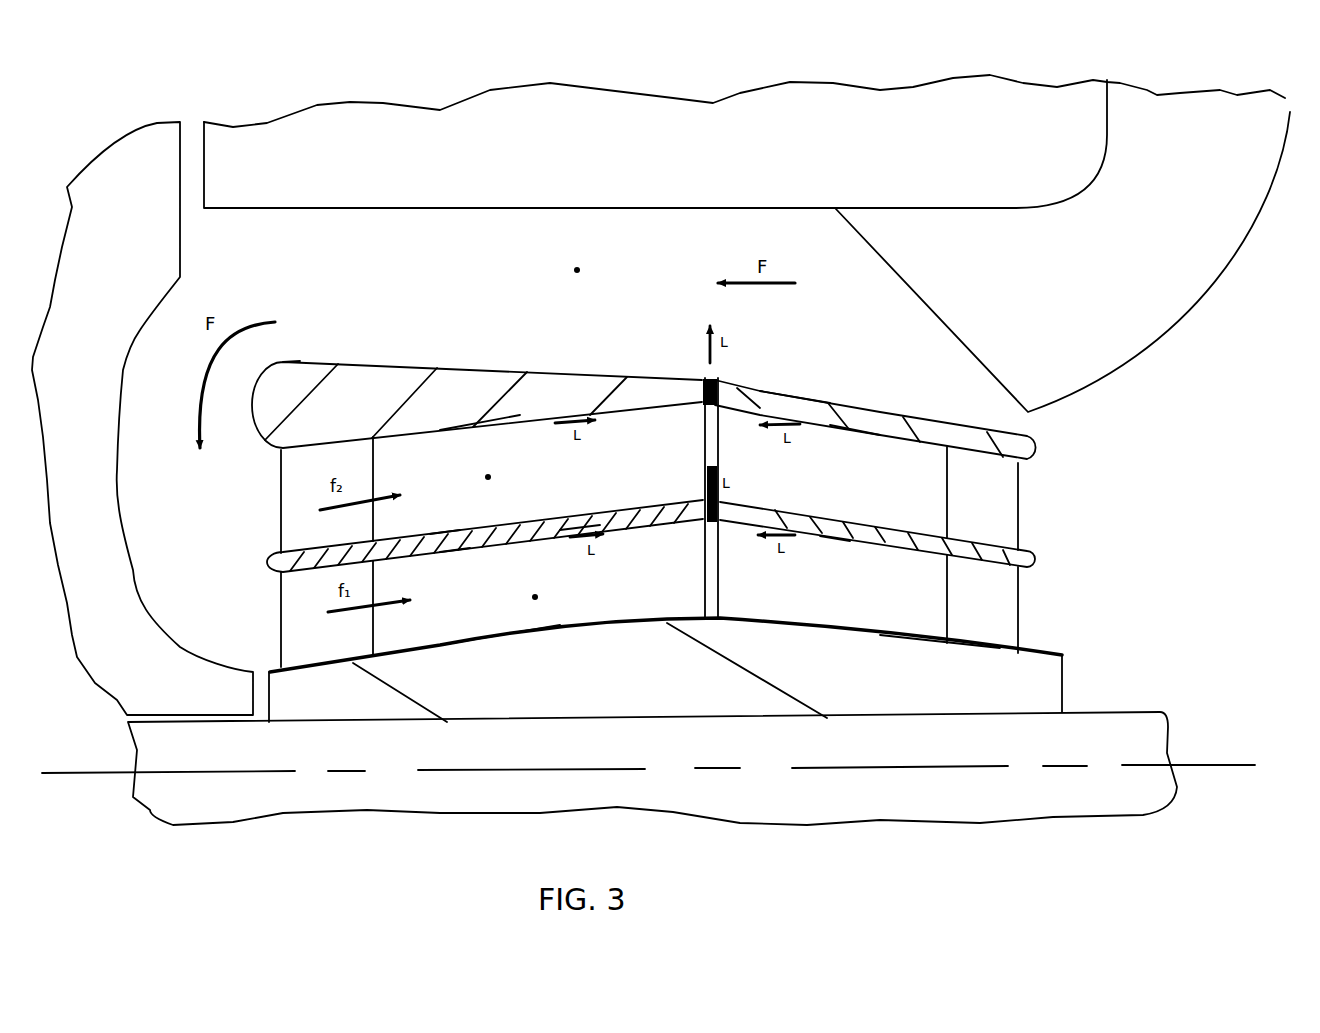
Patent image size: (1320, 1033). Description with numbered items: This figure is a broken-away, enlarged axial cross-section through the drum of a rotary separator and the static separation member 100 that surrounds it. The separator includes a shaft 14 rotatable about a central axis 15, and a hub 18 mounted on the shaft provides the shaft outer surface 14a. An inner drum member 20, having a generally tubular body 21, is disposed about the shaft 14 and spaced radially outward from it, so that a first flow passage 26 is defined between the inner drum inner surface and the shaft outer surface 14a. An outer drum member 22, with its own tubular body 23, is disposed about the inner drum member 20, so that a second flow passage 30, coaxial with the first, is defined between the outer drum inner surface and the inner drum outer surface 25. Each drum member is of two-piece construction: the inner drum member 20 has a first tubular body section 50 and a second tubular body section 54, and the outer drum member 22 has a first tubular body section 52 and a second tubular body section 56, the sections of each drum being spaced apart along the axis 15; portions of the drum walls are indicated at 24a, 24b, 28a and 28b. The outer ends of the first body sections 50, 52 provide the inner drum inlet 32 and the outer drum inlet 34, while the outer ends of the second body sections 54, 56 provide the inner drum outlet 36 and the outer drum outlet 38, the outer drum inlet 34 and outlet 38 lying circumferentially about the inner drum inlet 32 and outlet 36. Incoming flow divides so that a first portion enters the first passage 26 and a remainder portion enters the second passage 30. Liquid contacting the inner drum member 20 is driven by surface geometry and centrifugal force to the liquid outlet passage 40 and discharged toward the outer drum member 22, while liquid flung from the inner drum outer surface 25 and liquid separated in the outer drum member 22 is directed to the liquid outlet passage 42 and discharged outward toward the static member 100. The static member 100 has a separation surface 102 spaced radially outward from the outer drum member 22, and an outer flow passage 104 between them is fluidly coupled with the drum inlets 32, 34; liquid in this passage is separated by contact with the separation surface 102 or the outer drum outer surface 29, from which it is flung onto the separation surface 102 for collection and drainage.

The static separation member 100 is at (507, 117).
The separation surface 102 is at (473, 208).
The outer flow passage 104 is at (577, 270).
The shaft 14 is at (668, 736).
The outer surface of the shaft 14a is at (627, 617).
The central axis 15 is at (1235, 760).
The hub 18 is at (665, 659).
The inner drum member 20 is at (606, 532).
The tubular body 21 is at (444, 530).
The outer drum member 22 is at (644, 390).
The tubular body 23 is at (360, 362).
The lower plate first portion 24a is at (460, 553).
The lower plate second portion 24b is at (828, 540).
The outer circumferential surface of the inner drum 25 is at (582, 510).
The first flow passage 26 is at (535, 597).
The upper plate first portion 28a is at (519, 426).
The upper plate second portion 28b is at (868, 435).
The outer circumferential surface of the outer drum 29 is at (812, 400).
The second flow passage 30 is at (488, 477).
The inner drum member inlet 32 is at (268, 617).
The outer drum member inlet 34 is at (263, 508).
The inner drum member outlet 36 is at (1025, 613).
The outer drum member outlet 38 is at (1028, 513).
The liquid outlet passage 40 is at (721, 491).
The liquid outlet passage 42 is at (716, 384).
The first tubular body section 50 is at (515, 532).
The first tubular body section 52 is at (548, 382).
The second tubular body section 54 is at (893, 537).
The second tubular body section 56 is at (882, 427).